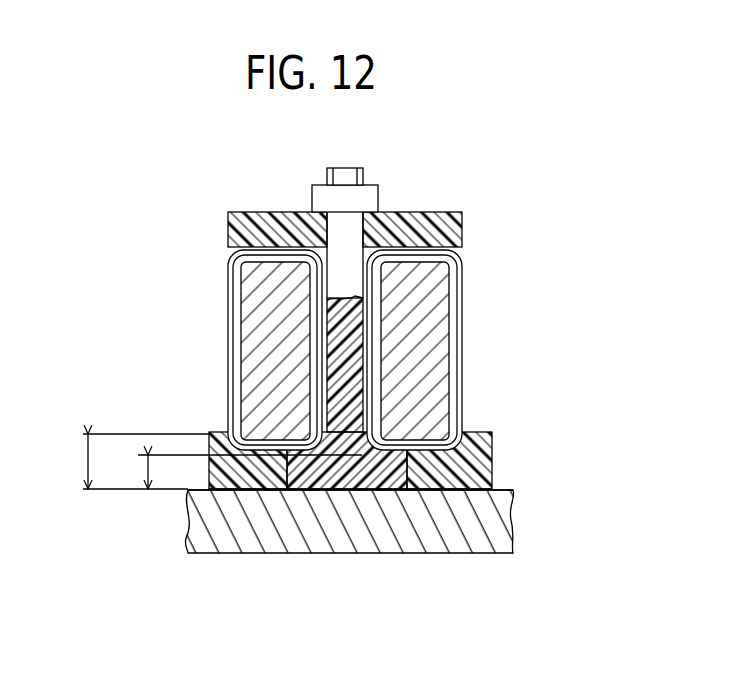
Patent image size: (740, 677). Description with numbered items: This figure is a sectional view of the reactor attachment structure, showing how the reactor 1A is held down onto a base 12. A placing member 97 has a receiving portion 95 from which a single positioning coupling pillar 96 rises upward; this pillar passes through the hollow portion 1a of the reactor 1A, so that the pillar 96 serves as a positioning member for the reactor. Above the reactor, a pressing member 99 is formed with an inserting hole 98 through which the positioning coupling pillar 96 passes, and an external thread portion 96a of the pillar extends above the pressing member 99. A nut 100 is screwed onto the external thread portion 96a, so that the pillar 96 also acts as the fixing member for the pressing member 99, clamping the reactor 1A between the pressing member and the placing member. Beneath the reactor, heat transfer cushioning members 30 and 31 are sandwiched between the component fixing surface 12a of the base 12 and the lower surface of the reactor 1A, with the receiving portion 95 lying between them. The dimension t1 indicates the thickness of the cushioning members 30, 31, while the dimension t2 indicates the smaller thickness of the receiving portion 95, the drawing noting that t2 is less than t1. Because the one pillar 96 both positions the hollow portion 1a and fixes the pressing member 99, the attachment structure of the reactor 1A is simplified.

The housing base 12 is at (490, 520).
The component fixing surface 12a is at (497, 489).
The heat transfer cushioning member 30 is at (243, 493).
The heat transfer cushioning member 31 is at (440, 493).
The receiving portion 95 is at (335, 492).
The positioning coupling pillar 96 is at (333, 386).
The external thread portion 96a is at (360, 182).
The placing member 97 is at (366, 492).
The inserting hole 98 is at (368, 238).
The pressing member 99 is at (452, 229).
The nut 100 is at (326, 200).
The hollow portion 1a is at (330, 320).
The reactor 1A is at (425, 328).
The thickness t1 is at (135, 461).
The thickness t2 is at (148, 470).